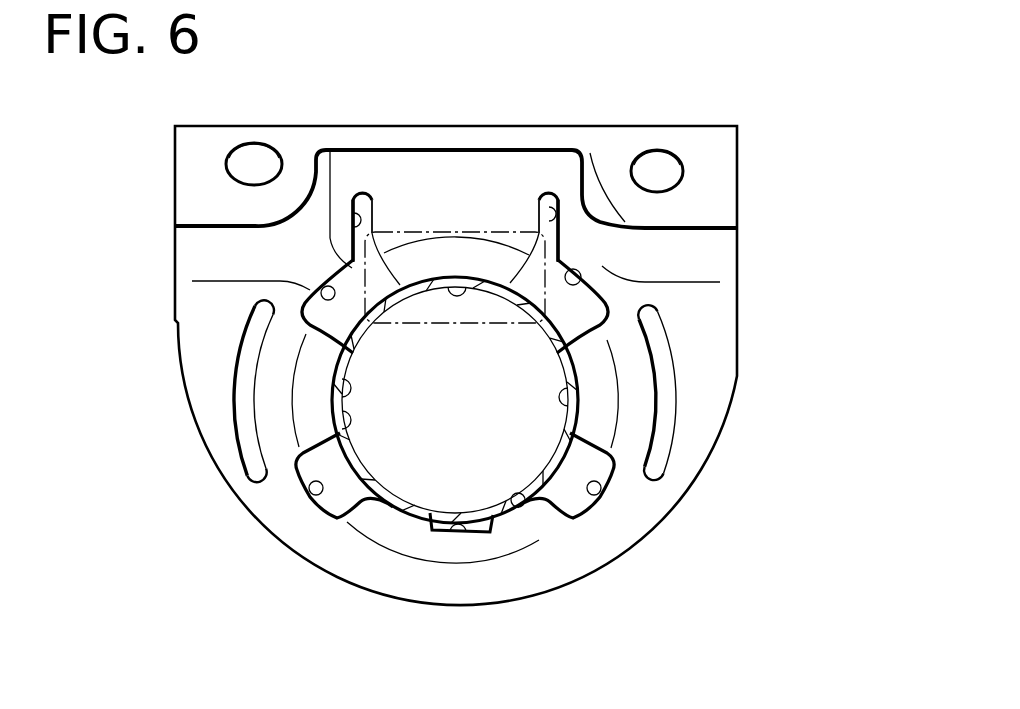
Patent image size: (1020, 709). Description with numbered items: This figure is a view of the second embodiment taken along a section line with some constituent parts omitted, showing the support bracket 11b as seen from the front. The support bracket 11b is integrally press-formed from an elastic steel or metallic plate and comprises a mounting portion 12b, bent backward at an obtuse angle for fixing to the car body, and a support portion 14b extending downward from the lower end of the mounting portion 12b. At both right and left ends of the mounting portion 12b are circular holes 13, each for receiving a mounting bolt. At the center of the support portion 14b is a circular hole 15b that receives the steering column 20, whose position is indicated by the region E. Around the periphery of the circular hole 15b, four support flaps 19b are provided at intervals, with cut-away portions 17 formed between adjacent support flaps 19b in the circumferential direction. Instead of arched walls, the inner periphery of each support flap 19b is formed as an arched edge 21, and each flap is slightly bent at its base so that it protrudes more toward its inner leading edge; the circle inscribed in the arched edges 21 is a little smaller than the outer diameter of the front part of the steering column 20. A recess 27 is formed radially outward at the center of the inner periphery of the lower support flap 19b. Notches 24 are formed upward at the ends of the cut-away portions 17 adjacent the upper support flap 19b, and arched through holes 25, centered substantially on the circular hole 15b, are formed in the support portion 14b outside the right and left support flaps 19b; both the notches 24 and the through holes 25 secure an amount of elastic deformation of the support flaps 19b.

The support bracket 11b is at (604, 126).
The mounting portion 12b is at (383, 148).
The circular holes 13 is at (254, 146).
The support portion 14b is at (687, 443).
The circular hole 15b is at (340, 433).
The cut-away portions 17 is at (320, 290).
The support flaps 19b is at (428, 258).
The steering column 20 is at (500, 278).
The arched edge 21 is at (475, 280).
The notches 24 is at (352, 208).
The arched through holes 25 is at (237, 385).
The recess 27 is at (447, 532).
The region E is at (440, 325).